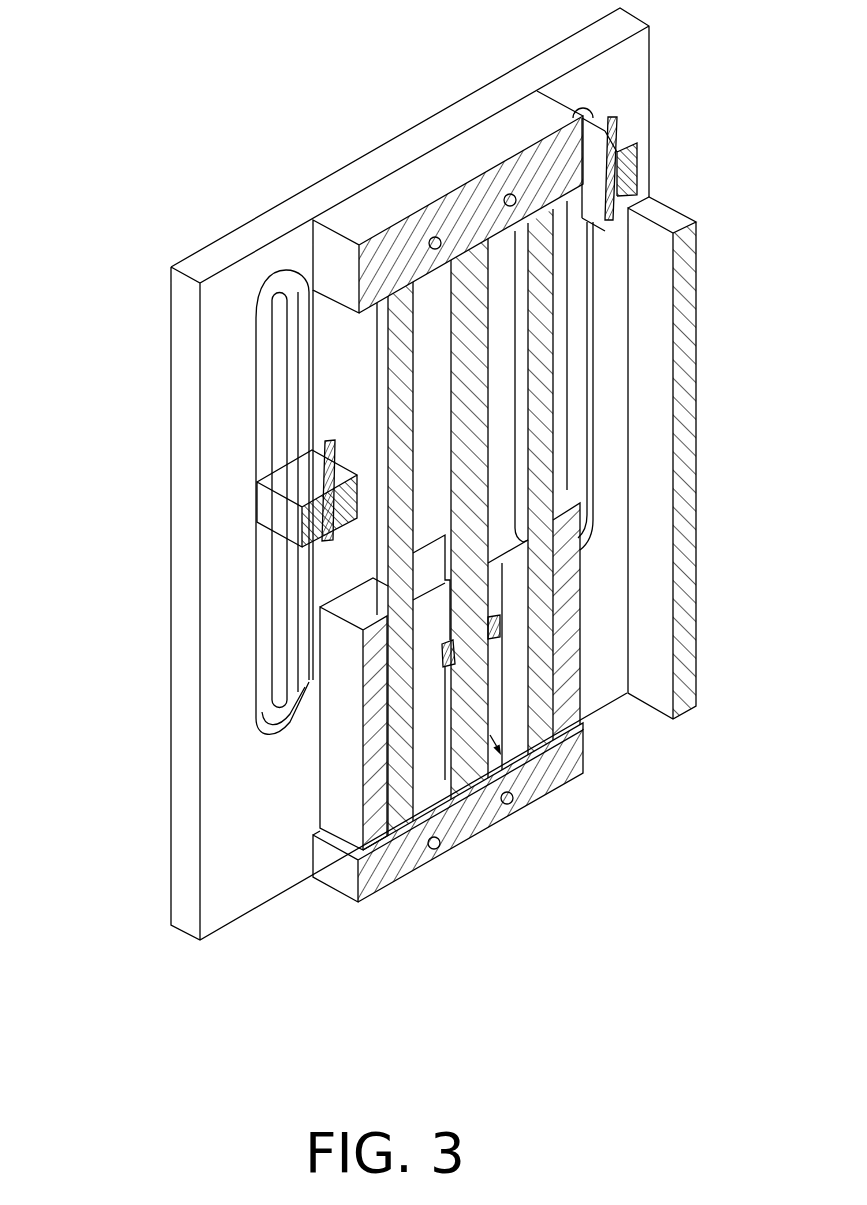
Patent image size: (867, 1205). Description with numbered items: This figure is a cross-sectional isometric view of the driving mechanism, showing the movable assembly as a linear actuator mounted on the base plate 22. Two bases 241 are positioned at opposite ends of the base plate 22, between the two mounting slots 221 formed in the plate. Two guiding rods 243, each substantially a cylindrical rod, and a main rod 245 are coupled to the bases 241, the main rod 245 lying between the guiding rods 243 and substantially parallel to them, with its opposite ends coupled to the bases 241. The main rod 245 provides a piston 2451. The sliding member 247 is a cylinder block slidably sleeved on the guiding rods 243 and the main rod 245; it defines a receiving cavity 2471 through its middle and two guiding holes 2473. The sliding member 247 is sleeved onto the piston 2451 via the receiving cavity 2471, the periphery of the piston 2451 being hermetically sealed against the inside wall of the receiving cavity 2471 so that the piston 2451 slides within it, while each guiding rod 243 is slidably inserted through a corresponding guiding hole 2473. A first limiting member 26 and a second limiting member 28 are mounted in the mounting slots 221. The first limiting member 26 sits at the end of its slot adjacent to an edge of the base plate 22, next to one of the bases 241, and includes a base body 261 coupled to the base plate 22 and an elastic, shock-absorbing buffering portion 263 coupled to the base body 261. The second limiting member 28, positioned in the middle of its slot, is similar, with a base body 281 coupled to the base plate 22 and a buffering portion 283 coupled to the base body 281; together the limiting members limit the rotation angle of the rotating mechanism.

The base plate 22 is at (215, 382).
The mounting slot 221 is at (263, 447).
The base 241 is at (396, 195).
The guiding rod 243 is at (407, 867).
The main rod 245 is at (487, 815).
The piston 2451 is at (440, 656).
The sliding member 247 is at (570, 728).
The receiving cavity 2471 is at (537, 777).
The guiding hole 2473 is at (397, 770).
The first limiting member 26 is at (655, 160).
The base body 261 is at (620, 150).
The buffering portion 263 is at (612, 180).
The second limiting member 28 is at (197, 531).
The base body 281 is at (268, 508).
The buffering portion 283 is at (320, 562).